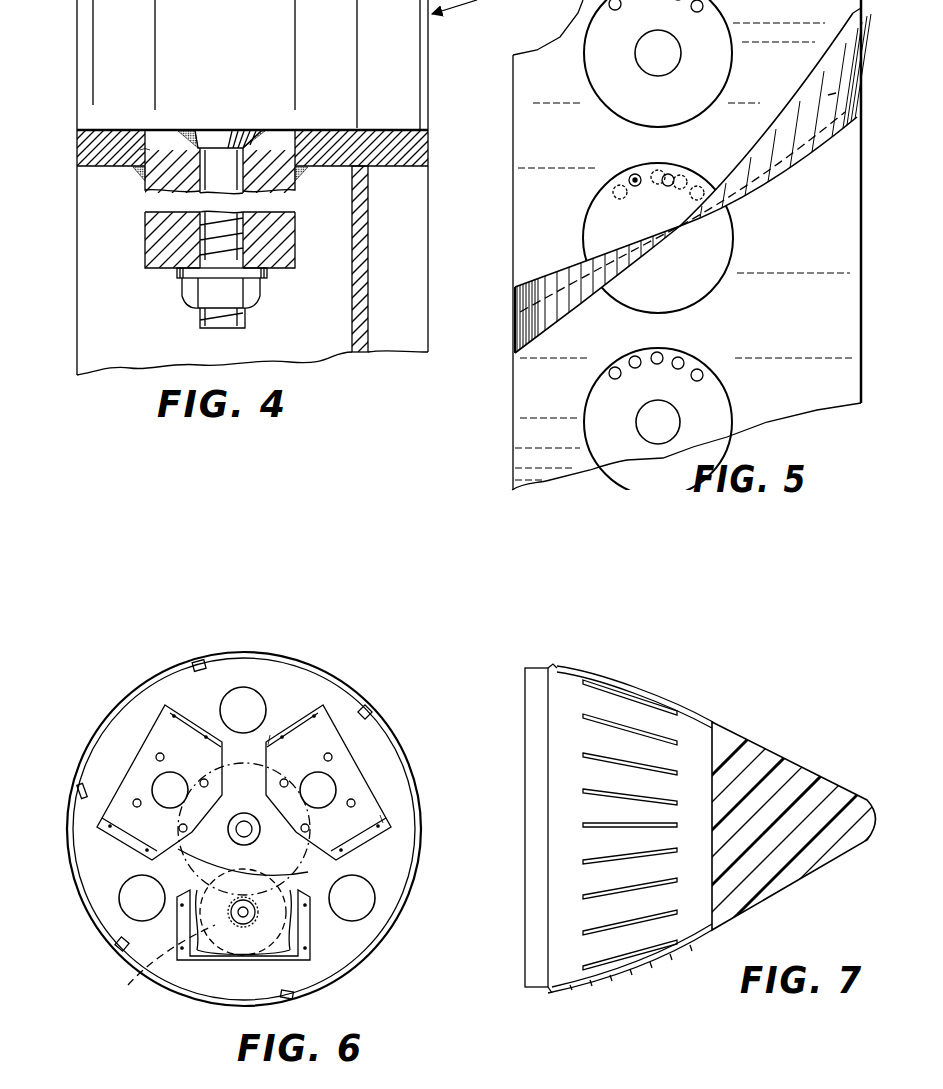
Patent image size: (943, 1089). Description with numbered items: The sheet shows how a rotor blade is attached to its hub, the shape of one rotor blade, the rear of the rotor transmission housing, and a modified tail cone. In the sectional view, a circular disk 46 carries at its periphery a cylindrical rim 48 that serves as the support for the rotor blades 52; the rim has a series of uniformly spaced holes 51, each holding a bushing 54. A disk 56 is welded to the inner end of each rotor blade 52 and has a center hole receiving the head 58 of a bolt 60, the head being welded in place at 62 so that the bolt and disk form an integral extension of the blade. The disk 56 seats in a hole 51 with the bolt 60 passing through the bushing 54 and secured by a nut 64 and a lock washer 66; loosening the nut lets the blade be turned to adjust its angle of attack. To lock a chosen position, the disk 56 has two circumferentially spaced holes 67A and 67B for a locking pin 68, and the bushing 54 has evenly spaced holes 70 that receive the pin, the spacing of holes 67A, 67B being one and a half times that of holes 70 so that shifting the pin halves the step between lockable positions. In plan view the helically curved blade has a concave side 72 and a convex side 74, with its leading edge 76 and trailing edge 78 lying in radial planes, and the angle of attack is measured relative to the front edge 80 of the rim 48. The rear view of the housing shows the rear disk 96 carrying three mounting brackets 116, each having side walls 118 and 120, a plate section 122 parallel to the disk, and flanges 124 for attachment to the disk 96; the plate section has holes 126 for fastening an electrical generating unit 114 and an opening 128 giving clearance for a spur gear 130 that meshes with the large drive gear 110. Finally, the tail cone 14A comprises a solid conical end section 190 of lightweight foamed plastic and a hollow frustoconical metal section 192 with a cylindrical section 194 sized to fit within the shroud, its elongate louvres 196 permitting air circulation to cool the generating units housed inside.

In FIG. 4, the circular disk 46 is at (368, 268).
In FIG. 4, the cylindrical rim 48 is at (418, 152).
In FIG. 5, the cylindrical rim 48 is at (538, 413).
In FIG. 4, the holes 51 is at (146, 152).
In FIG. 5, the holes 51 is at (698, 366).
In FIG. 5, the rotor blades 52 is at (808, 168).
In FIG. 4, the bushing 54 is at (160, 238).
In FIG. 5, the bushing 54 is at (717, 60).
In FIG. 4, the disk 56 is at (280, 140).
In FIG. 5, the disk 56 is at (717, 287).
In FIG. 4, the head 58 is at (218, 142).
In FIG. 4, the bolt 60 is at (216, 185).
In FIG. 4, the weld 62 is at (183, 142).
In FIG. 4, the nut 64 is at (188, 292).
In FIG. 4, the lock washer 66 is at (267, 274).
In FIG. 5, the hole 67A is at (625, 186).
In FIG. 5, the hole 67B is at (670, 176).
In FIG. 5, the locking pin 68 is at (633, 176).
In FIG. 5, the holes 70 is at (635, 360).
In FIG. 5, the concave side 72 is at (543, 300).
In FIG. 5, the convex side 74 is at (828, 95).
In FIG. 5, the leading edge 76 is at (513, 322).
In FIG. 5, the trailing edge 78 is at (861, 48).
In FIG. 5, the front edge 80 is at (512, 457).
In FIG. 6, the rear disk 96 is at (185, 683).
In FIG. 6, the drive gear 110 is at (395, 868).
In FIG. 6, the electrical generating unit 114 is at (164, 968).
In FIG. 6, the mounting bracket 116 is at (143, 733).
In FIG. 6, the side wall 118 is at (308, 715).
In FIG. 6, the side wall 120 is at (413, 848).
In FIG. 6, the plate section 122 is at (343, 770).
In FIG. 6, the flanges 124 is at (285, 728).
In FIG. 6, the holes 126 is at (134, 800).
In FIG. 6, the opening 128 is at (160, 788).
In FIG. 6, the spur gear 130 is at (310, 935).
In FIG. 7, the tail cone 14A is at (745, 715).
In FIG. 7, the solid conical end section 190 is at (817, 763).
In FIG. 7, the hollow frustoconical metal section 192 is at (602, 672).
In FIG. 7, the cylindrical section 194 is at (530, 667).
In FIG. 7, the louvres 196 is at (672, 943).